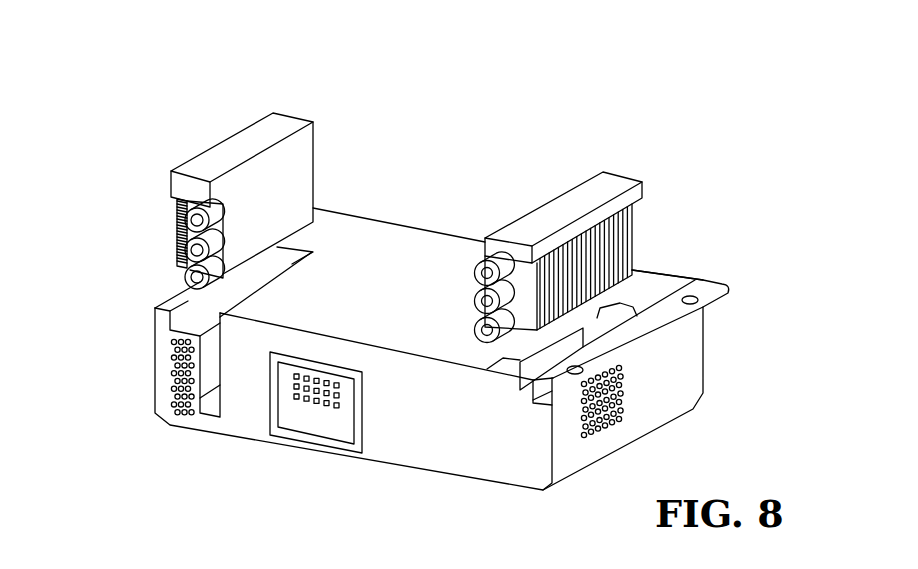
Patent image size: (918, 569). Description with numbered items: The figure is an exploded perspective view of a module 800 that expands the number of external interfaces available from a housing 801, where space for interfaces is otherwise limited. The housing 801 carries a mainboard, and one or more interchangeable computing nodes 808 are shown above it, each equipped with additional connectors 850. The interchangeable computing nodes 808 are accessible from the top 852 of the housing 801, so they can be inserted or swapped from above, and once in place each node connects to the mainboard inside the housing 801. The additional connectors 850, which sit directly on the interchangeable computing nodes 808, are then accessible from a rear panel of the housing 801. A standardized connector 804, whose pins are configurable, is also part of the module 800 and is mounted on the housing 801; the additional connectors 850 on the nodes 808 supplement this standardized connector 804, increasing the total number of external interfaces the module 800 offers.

The module 800 is at (103, 99).
The housing 801 is at (455, 457).
The standardized connector 804 is at (292, 423).
The interchangeable computing node 808 is at (289, 122).
The additional connectors 850 is at (180, 277).
The top 852 is at (398, 237).